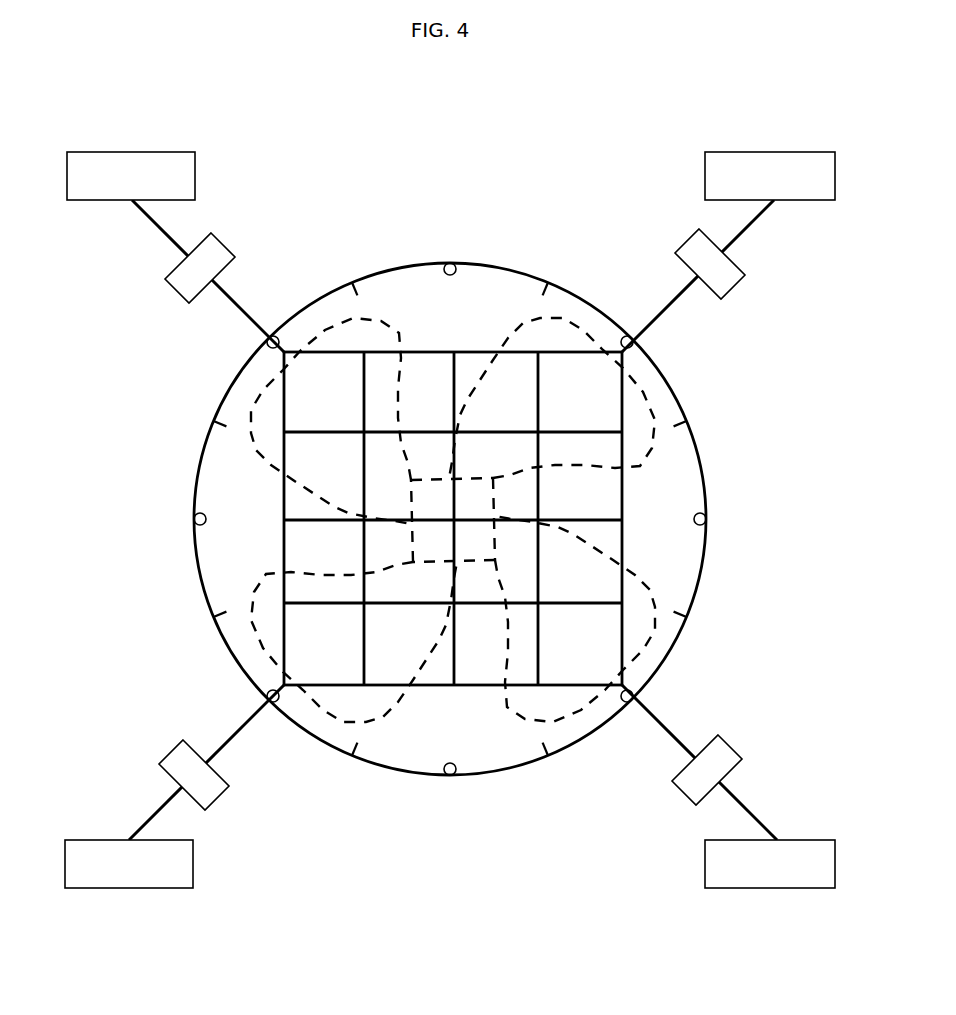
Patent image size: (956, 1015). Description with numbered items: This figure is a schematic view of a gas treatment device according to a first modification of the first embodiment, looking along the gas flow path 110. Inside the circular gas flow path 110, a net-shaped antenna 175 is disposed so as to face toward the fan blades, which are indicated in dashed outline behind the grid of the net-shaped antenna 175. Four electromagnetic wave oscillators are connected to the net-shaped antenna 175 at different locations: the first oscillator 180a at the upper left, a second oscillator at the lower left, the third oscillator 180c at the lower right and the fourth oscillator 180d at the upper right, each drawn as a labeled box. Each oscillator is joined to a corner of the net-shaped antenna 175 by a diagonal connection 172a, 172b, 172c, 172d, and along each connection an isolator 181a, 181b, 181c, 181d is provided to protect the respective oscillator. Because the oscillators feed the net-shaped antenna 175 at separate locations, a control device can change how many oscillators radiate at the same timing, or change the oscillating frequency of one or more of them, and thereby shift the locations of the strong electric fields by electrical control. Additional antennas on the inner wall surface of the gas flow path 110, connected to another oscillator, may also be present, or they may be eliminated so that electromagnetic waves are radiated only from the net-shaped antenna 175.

The gas flow path 110 is at (417, 747).
The net-shaped antenna 175 is at (622, 492).
The first support arm 172a is at (156, 224).
The second support arm 172b is at (148, 822).
The third support arm 172c is at (675, 737).
The fourth support arm 172d is at (665, 309).
The isolator 181a is at (226, 250).
The isolator 181b is at (220, 795).
The isolator 181c is at (677, 795).
The isolator 181d is at (733, 292).
The first oscillator 180a is at (147, 152).
The third oscillator 180c is at (770, 888).
The fourth oscillator 180d is at (772, 152).